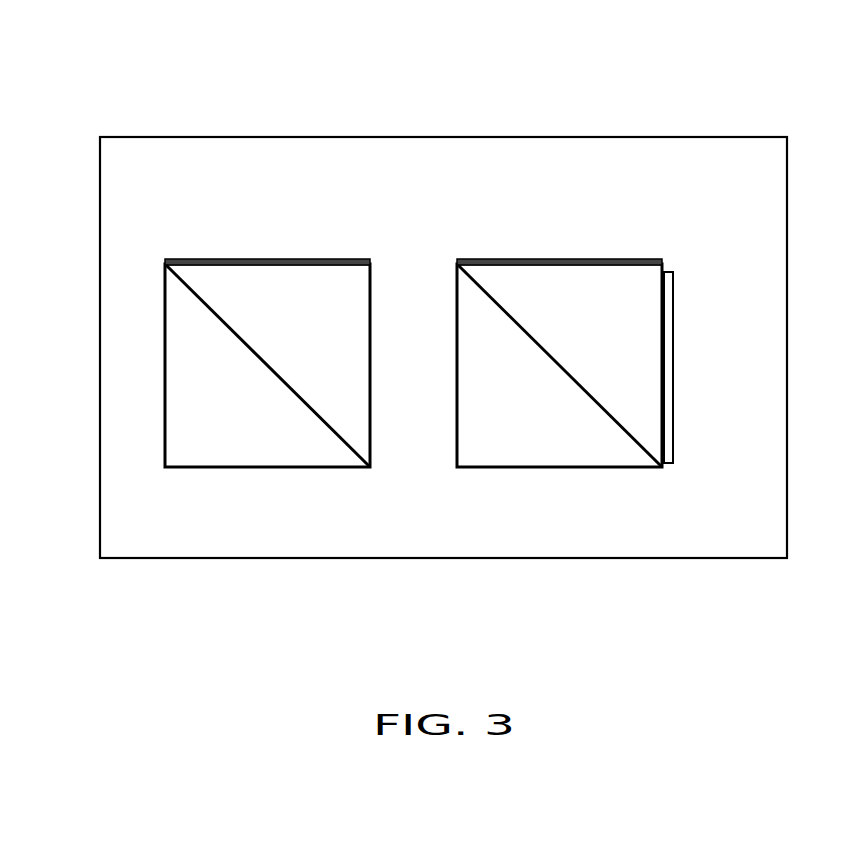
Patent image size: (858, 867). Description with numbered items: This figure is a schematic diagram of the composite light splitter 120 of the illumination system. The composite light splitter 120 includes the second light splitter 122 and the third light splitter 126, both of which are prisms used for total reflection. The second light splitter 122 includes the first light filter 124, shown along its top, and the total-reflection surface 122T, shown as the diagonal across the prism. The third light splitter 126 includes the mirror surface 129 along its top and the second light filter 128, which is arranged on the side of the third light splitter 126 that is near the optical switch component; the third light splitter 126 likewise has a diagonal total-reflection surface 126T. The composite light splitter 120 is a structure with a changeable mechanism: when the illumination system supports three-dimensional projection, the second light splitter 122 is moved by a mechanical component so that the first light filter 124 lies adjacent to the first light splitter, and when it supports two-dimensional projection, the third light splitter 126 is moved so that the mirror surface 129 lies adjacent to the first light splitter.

The composite light splitter 120 is at (100, 89).
The second light splitter 122 is at (166, 214).
The first light filter 124 is at (267, 260).
The total-reflection surface 122T is at (270, 369).
The third light splitter 126 is at (458, 215).
The mirror surface 129 is at (559, 260).
The second diagonal / transistor line 126T is at (562, 370).
The second light filter 128 is at (674, 367).